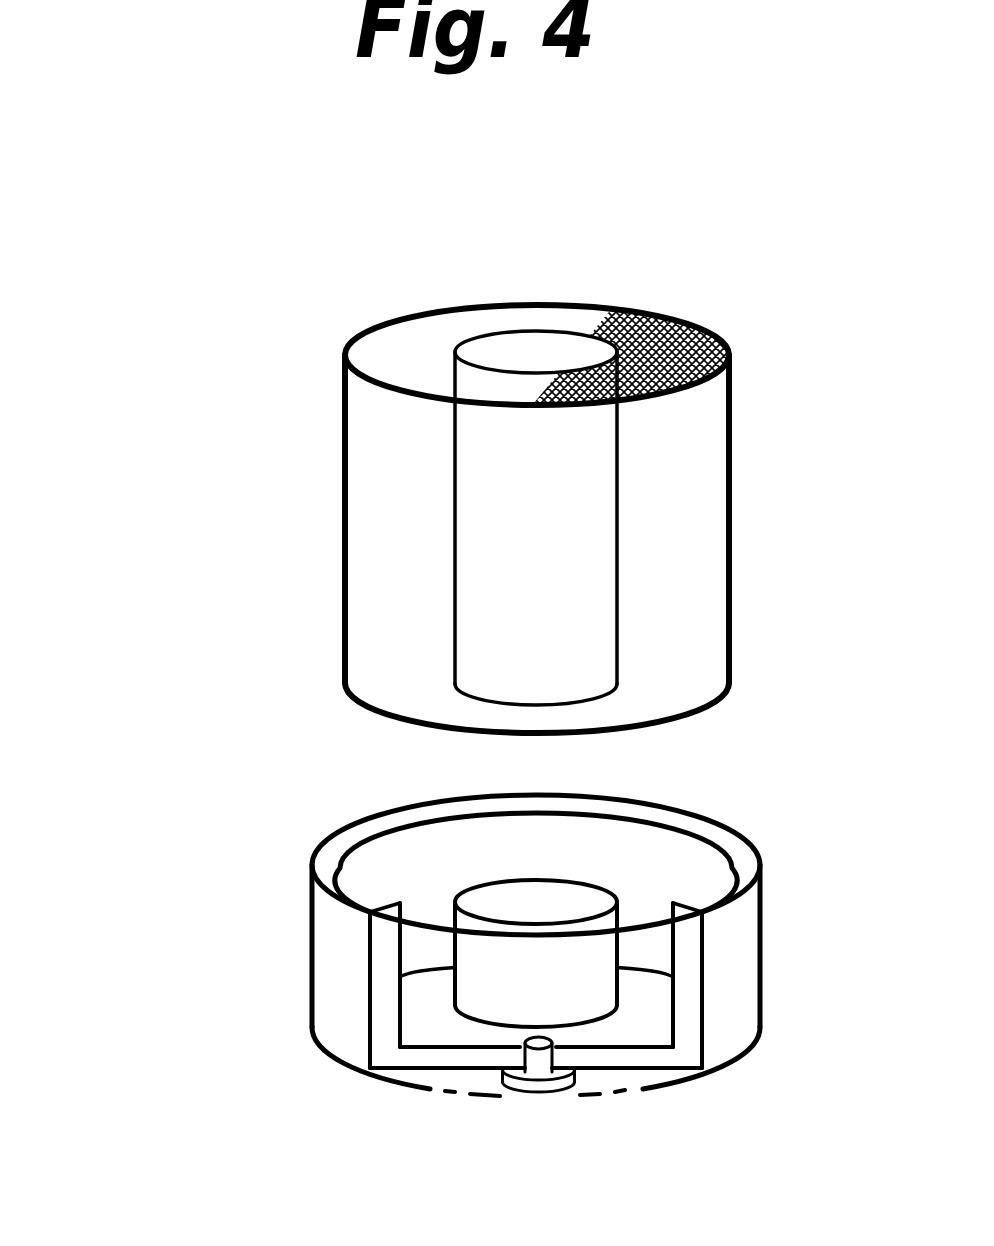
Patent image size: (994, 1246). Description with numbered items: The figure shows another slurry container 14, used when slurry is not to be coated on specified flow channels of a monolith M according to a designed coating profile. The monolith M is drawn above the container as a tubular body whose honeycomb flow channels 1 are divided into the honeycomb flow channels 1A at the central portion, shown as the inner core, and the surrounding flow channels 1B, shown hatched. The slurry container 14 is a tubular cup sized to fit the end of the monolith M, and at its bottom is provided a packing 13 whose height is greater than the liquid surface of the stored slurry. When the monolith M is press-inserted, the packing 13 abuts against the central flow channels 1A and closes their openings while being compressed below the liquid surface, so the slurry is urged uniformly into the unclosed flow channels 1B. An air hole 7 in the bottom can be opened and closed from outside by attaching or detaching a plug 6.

The honeycomb flow channels 1 is at (435, 443).
The honeycomb flow channels at central portion 1A is at (395, 485).
The flow channels not closed by the packing 1B is at (472, 301).
The monolith M is at (390, 544).
The packing 13 is at (354, 899).
The slurry container 14 is at (414, 945).
The air hole 7 is at (622, 1005).
The plug 6 is at (379, 1103).